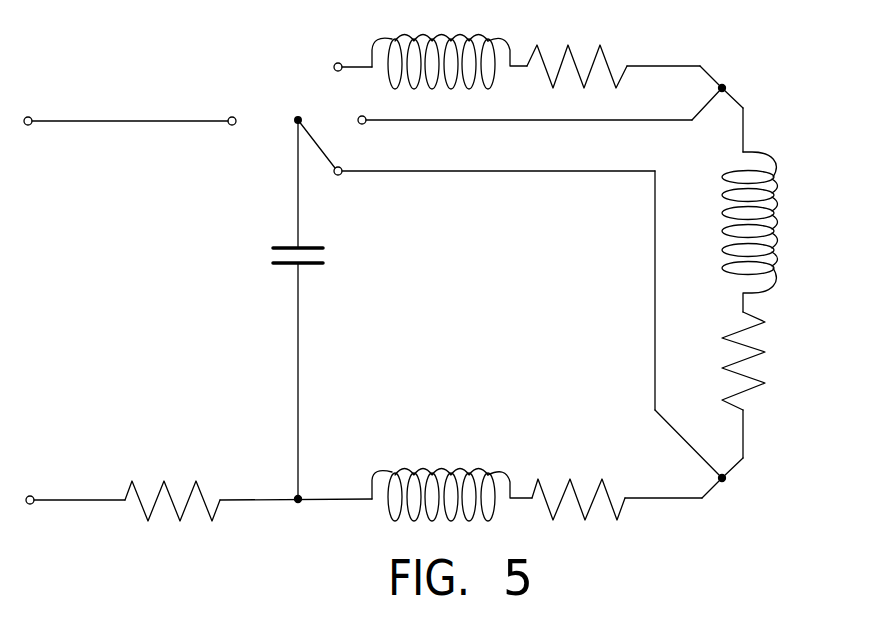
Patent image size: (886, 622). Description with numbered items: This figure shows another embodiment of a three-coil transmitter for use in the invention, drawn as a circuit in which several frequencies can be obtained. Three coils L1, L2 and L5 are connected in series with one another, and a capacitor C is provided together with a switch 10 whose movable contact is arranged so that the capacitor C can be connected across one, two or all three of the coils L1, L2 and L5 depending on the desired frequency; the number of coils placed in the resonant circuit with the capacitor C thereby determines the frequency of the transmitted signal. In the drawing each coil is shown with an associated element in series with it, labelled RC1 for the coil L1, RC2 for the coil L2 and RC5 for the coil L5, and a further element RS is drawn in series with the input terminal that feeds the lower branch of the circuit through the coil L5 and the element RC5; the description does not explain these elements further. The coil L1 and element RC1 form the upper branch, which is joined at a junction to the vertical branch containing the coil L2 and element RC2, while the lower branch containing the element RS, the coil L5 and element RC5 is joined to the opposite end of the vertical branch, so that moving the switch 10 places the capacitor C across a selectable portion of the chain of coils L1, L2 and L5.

The switch 10 is at (311, 131).
The coil L1 is at (430, 44).
The resistor RC1 is at (624, 44).
The coil L2 is at (773, 200).
The resistor RC2 is at (773, 395).
The coil L5 is at (452, 467).
The resistor RC5 is at (578, 475).
The capacitor C is at (284, 309).
The resistor RS is at (123, 476).